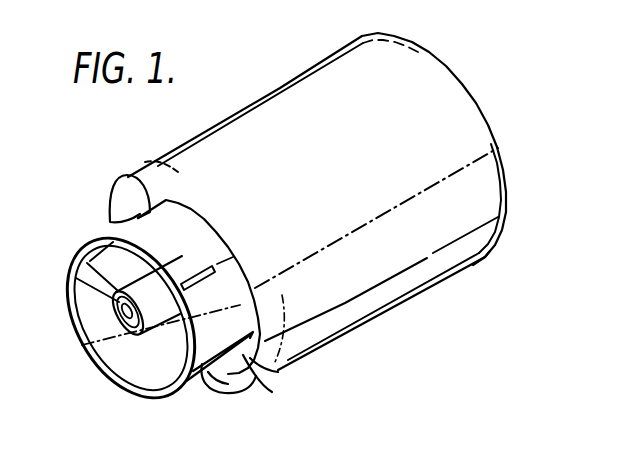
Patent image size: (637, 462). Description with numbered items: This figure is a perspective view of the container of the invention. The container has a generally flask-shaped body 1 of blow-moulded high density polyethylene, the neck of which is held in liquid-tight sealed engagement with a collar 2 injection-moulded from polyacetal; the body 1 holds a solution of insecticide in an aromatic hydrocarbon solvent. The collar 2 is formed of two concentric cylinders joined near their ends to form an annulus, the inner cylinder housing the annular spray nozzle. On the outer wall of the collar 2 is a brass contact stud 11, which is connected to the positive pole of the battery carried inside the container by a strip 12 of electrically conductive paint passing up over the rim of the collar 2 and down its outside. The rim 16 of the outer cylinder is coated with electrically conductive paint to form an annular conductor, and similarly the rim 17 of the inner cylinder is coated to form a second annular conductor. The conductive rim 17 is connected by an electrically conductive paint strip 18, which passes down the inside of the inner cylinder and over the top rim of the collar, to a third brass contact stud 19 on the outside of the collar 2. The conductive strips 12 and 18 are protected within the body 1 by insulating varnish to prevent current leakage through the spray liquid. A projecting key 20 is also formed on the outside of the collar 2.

The flask-shaped body 1 is at (272, 102).
The collar 2 is at (240, 288).
The brass contact stud 11 is at (145, 212).
The strip of electrically conductive paint 12 is at (128, 176).
The rim of the outer cylinder 16 is at (140, 389).
The rim of the inner cylinder 17 is at (88, 311).
The electrically conductive paint strip 18 is at (252, 366).
The third brass contact stud 19 is at (208, 382).
The projecting key 20 is at (208, 268).